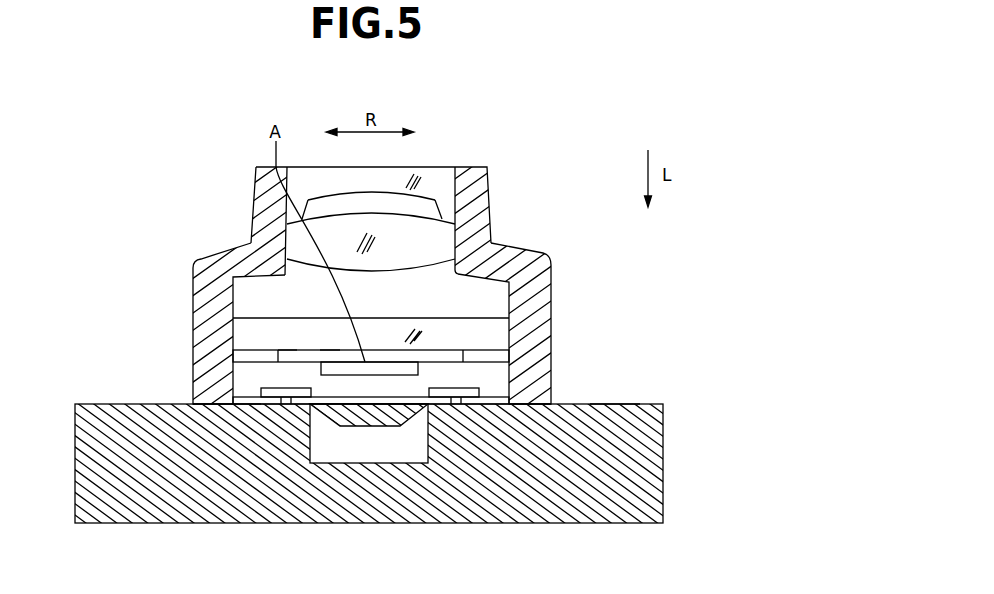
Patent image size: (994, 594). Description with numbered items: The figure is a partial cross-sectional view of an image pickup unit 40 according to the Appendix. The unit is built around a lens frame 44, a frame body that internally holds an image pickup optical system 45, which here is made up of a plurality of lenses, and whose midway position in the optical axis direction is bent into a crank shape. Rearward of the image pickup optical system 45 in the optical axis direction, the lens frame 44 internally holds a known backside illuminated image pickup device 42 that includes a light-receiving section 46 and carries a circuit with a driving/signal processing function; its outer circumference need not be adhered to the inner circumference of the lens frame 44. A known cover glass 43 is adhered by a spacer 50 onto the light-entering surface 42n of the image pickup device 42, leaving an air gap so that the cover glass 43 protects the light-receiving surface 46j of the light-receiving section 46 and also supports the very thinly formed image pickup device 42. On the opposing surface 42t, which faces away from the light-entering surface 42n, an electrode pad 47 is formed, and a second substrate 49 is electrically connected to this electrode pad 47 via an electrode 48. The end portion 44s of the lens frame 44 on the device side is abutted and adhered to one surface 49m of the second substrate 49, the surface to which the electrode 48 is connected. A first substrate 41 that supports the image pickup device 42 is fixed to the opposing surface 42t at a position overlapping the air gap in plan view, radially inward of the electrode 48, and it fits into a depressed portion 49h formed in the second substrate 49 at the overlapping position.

The image pickup unit 40 is at (568, 140).
The first substrate 41 is at (372, 440).
The image pickup device 42 is at (258, 382).
The light-entering surface 42n is at (335, 362).
The opposing surface 42t is at (248, 405).
The cover glass 43 is at (250, 338).
The lens frame 44 is at (473, 188).
The end portion of the lens frame 44s is at (210, 405).
The image pickup optical system 45 is at (430, 243).
The light-receiving section 46 is at (355, 372).
The light-receiving surface 46j is at (297, 362).
The electrode pad 47 is at (285, 396).
The electrode 48 is at (287, 399).
The second substrate 49 is at (527, 478).
The depressed portion 49h is at (422, 460).
The one surface of the second substrate 49m is at (618, 404).
The spacer 50 is at (250, 358).